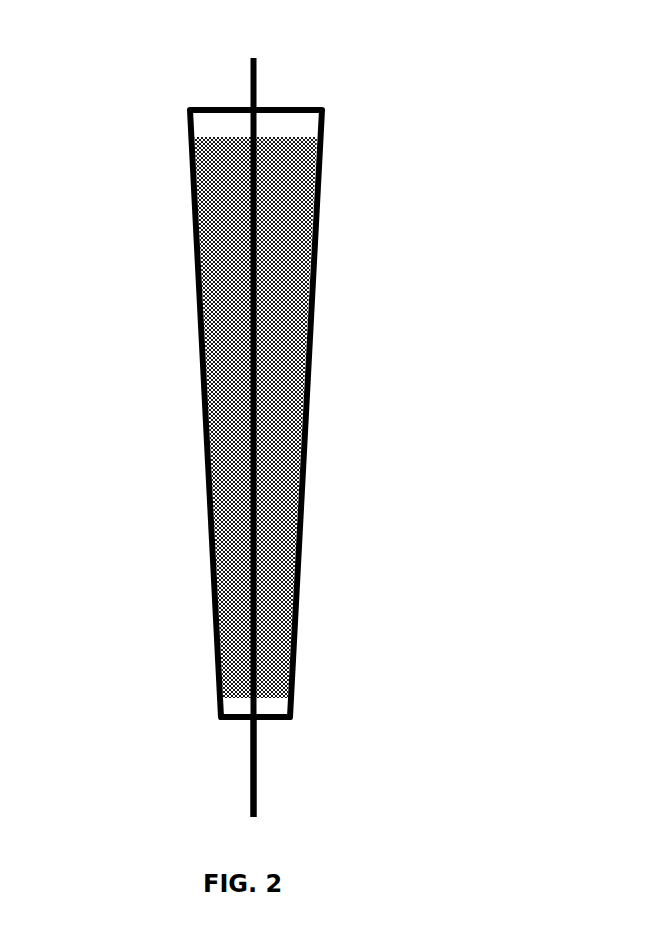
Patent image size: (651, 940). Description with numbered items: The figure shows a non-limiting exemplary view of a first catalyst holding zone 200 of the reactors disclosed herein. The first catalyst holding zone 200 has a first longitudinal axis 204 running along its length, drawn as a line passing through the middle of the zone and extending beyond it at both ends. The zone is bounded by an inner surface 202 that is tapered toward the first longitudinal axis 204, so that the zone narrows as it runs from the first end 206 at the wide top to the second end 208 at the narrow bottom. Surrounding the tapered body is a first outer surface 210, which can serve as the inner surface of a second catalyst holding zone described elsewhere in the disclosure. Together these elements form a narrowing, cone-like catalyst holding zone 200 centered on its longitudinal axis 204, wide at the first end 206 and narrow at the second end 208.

The first catalyst holding zone 200 is at (297, 414).
The inner surface 202 is at (285, 414).
The first longitudinal axis 204 is at (322, 768).
The first end 206 is at (182, 380).
The second end 208 is at (176, 759).
The first outer surface 210 is at (326, 417).